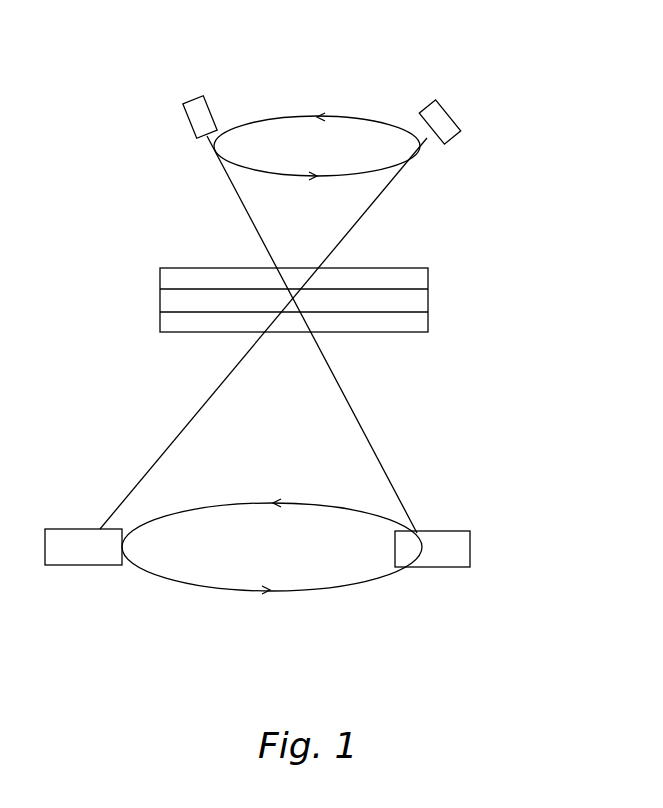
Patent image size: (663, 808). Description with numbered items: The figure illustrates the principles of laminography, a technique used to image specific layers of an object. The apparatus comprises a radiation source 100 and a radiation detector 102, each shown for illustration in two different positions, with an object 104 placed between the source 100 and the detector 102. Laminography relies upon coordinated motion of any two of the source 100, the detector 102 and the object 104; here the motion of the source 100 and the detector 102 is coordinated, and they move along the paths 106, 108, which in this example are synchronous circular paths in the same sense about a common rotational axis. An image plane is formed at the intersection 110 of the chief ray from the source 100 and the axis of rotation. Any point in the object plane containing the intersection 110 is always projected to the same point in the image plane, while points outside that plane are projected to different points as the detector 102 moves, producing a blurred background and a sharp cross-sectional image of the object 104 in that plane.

The radiation source 100 is at (183, 123).
The radiation detector 102 is at (72, 530).
The object 104 is at (428, 300).
The path 106 is at (343, 130).
The path 108 is at (340, 588).
The intersection 110 is at (293, 300).